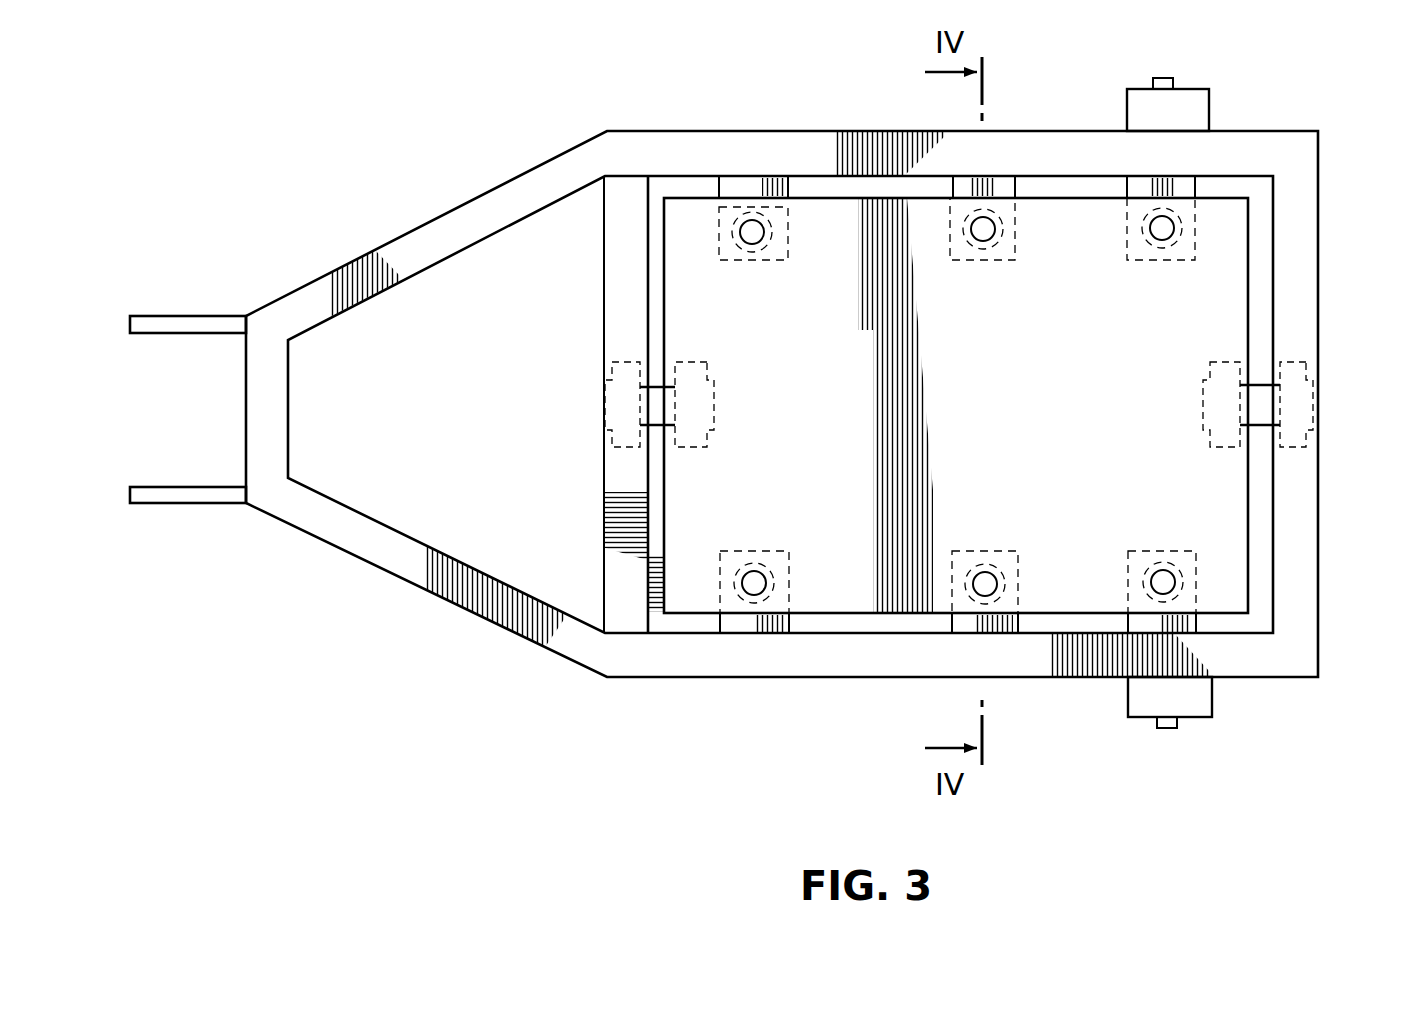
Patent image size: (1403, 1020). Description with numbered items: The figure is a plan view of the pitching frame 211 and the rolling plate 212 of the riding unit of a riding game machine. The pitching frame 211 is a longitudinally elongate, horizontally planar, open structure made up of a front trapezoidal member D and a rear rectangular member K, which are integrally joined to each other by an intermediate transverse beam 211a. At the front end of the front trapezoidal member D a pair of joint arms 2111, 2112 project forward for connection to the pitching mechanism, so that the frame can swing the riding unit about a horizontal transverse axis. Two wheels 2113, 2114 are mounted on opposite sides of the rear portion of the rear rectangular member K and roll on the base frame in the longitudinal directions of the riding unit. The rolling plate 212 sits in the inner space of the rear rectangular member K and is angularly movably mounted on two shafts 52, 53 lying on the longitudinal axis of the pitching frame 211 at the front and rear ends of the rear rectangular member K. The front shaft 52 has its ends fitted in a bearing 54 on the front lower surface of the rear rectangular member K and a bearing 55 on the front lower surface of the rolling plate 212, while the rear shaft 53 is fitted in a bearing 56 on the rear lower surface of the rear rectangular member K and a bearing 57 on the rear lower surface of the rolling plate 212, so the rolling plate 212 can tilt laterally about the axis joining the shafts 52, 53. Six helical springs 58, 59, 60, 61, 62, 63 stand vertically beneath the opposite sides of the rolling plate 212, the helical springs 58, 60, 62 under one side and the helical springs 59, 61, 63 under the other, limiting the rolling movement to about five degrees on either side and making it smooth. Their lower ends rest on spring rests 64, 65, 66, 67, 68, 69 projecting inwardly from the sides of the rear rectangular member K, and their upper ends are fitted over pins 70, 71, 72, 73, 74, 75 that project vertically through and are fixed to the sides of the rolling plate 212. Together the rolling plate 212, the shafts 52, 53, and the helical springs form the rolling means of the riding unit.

The pitching frame 211 is at (675, 140).
The intermediate transverse beam 211a is at (612, 575).
The rolling plate 212 is at (873, 593).
The joint arm 2111 is at (160, 316).
The joint arm 2112 is at (172, 505).
The wheel 2113 is at (1200, 112).
The wheel 2114 is at (1200, 700).
The rear rectangular member K is at (790, 125).
The front trapezoidal member D is at (436, 212).
The shaft 52 is at (658, 390).
The shaft 53 is at (1265, 383).
The bearing 54 is at (620, 424).
The bearing 55 is at (700, 440).
The bearing 56 is at (1303, 440).
The bearing 57 is at (1218, 430).
The helical spring 58 is at (775, 260).
The helical spring 59 is at (770, 550).
The helical spring 60 is at (955, 258).
The helical spring 61 is at (955, 550).
The helical spring 62 is at (1132, 258).
The helical spring 63 is at (1133, 550).
The spring rest 64 is at (780, 187).
The spring rest 65 is at (780, 625).
The spring rest 66 is at (953, 185).
The spring rest 67 is at (960, 628).
The spring rest 68 is at (1125, 185).
The spring rest 69 is at (1130, 628).
The pin 70 is at (752, 245).
The pin 71 is at (754, 570).
The pin 72 is at (983, 243).
The pin 73 is at (985, 570).
The pin 74 is at (1162, 243).
The pin 75 is at (1163, 568).